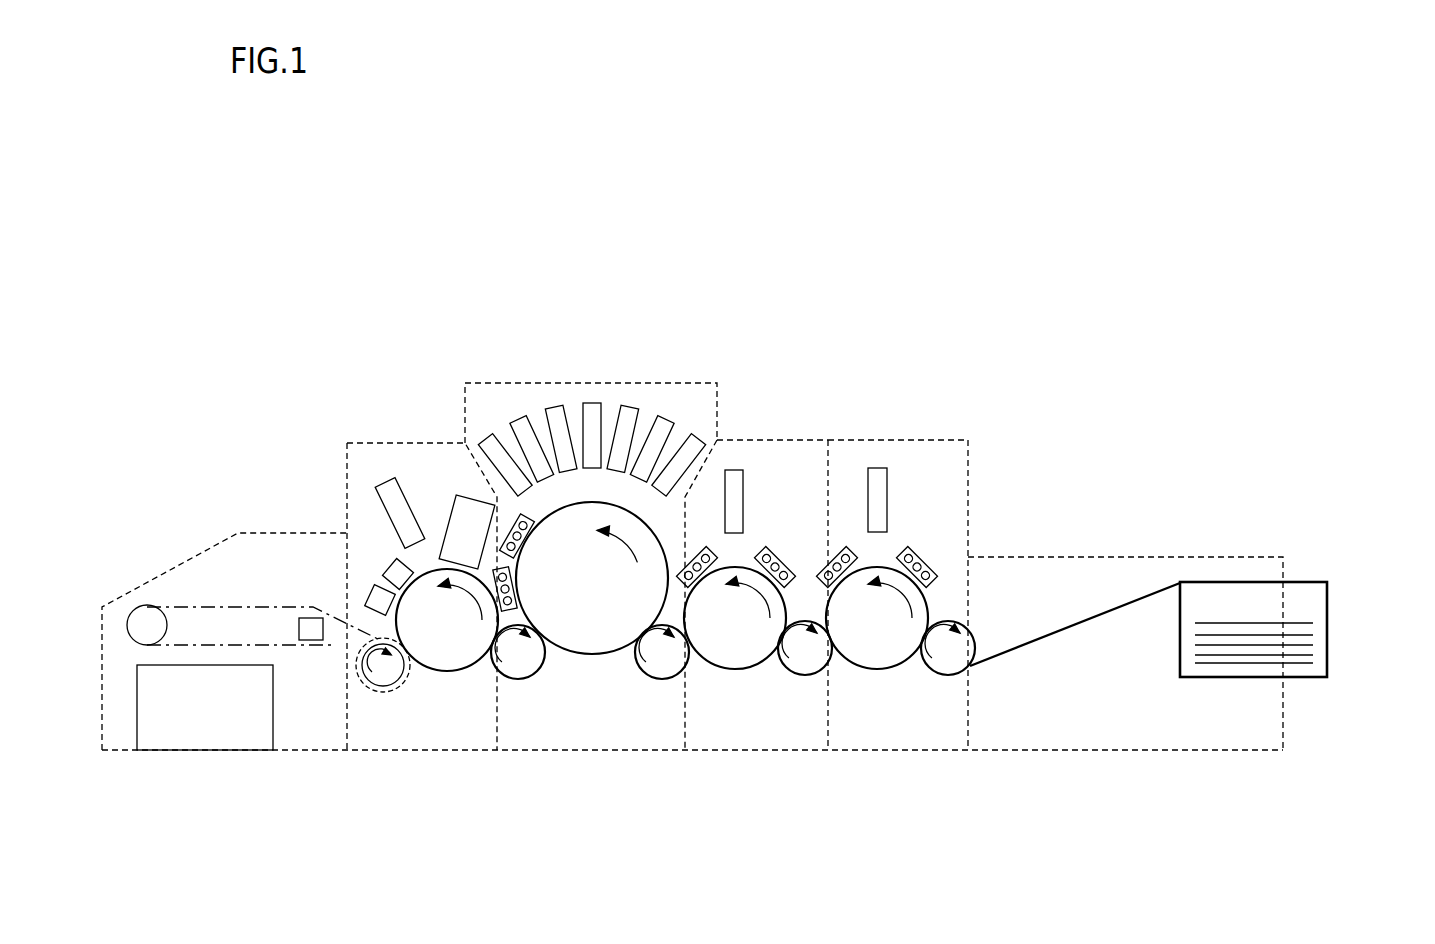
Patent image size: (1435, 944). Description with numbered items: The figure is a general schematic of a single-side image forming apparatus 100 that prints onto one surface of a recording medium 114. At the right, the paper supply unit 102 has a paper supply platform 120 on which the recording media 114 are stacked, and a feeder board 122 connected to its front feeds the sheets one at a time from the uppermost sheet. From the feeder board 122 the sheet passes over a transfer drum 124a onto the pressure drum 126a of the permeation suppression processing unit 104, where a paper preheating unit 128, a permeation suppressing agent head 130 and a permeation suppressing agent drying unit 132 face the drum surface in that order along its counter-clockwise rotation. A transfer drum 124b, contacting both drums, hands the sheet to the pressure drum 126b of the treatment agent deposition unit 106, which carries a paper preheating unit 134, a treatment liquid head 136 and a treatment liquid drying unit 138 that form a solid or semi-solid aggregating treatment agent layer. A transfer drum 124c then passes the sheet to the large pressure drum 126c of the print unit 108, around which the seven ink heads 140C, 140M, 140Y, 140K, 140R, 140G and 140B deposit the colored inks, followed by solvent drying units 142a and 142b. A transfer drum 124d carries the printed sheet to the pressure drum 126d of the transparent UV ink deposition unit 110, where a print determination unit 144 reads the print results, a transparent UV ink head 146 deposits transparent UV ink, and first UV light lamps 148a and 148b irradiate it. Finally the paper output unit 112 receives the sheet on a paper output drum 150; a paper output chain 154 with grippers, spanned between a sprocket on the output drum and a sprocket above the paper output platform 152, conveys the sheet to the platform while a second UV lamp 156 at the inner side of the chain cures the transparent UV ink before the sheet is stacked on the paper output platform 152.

The image forming apparatus 100 is at (863, 237).
The paper supply unit 102 is at (1247, 497).
The permeation suppression processing unit 104 is at (897, 408).
The treatment agent deposition unit 106 is at (783, 360).
The print unit 108 is at (593, 268).
The transparent UV ink deposition unit 110 is at (403, 380).
The paper output unit 112 is at (230, 502).
The recording medium 114 is at (1273, 623).
The paper supply platform 120 is at (1327, 630).
The feeder board 122 is at (1057, 630).
The transfer drum 124a is at (945, 676).
The transfer drum 124b is at (805, 676).
The transfer drum 124c is at (664, 680).
The transfer drum 124d is at (518, 680).
The pressure drum 126a is at (877, 670).
The pressure drum 126b is at (733, 670).
The pressure drum 126c is at (595, 655).
The pressure drum 126d is at (447, 672).
The paper preheating unit 128 is at (925, 554).
The permeation suppressing agent head 130 is at (880, 467).
The permeation suppressing agent drying unit 132 is at (840, 557).
The paper preheating unit 134 is at (778, 557).
The treatment liquid head 136 is at (743, 470).
The treatment liquid drying unit 138 is at (697, 557).
The ink head 140B is at (485, 439).
The ink head 140G is at (518, 419).
The ink head 140R is at (554, 407).
The ink head 140K is at (592, 403).
The ink head 140Y is at (630, 407).
The ink head 140M is at (666, 419).
The ink head 140C is at (698, 439).
The solvent drying unit 142a is at (522, 547).
The solvent drying unit 142b is at (515, 590).
The print determination unit 144 is at (454, 497).
The transparent UV ink head 146 is at (390, 485).
The first UV light lamp 148a is at (395, 565).
The first UV light lamp 148b is at (367, 593).
The paper output drum 150 is at (383, 688).
The paper output platform 152 is at (190, 755).
The paper output chain 154 is at (218, 603).
The second UV lamp 156 is at (308, 640).